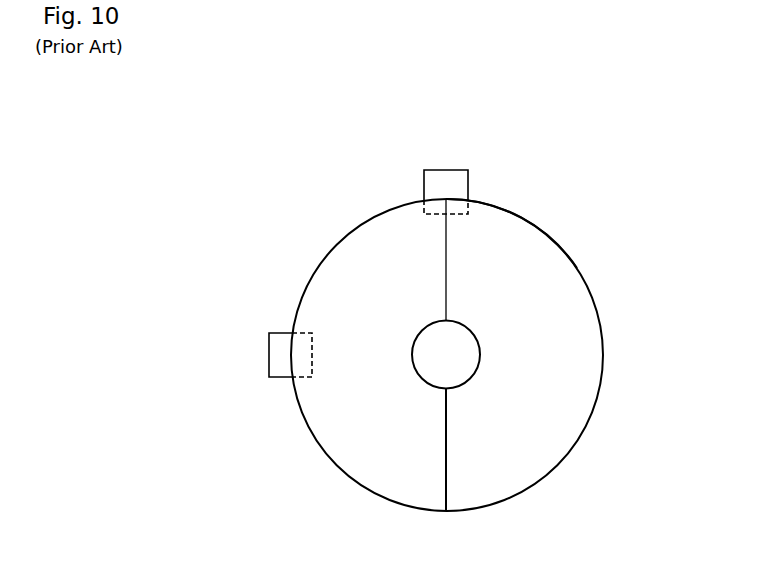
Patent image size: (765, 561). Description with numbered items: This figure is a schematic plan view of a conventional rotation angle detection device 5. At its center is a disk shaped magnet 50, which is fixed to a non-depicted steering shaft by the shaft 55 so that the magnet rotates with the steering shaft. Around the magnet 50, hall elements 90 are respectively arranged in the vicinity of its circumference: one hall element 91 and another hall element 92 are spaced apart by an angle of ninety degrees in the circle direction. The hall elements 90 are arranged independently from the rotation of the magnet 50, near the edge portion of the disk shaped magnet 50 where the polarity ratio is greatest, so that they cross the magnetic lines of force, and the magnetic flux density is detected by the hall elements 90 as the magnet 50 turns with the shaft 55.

The rotation angle detection device 5 is at (570, 185).
The magnet 50 is at (577, 268).
The shaft 55 is at (473, 375).
The hall elements 90 is at (368, 273).
The hall element 91 is at (282, 378).
The hall element 92 is at (445, 170).